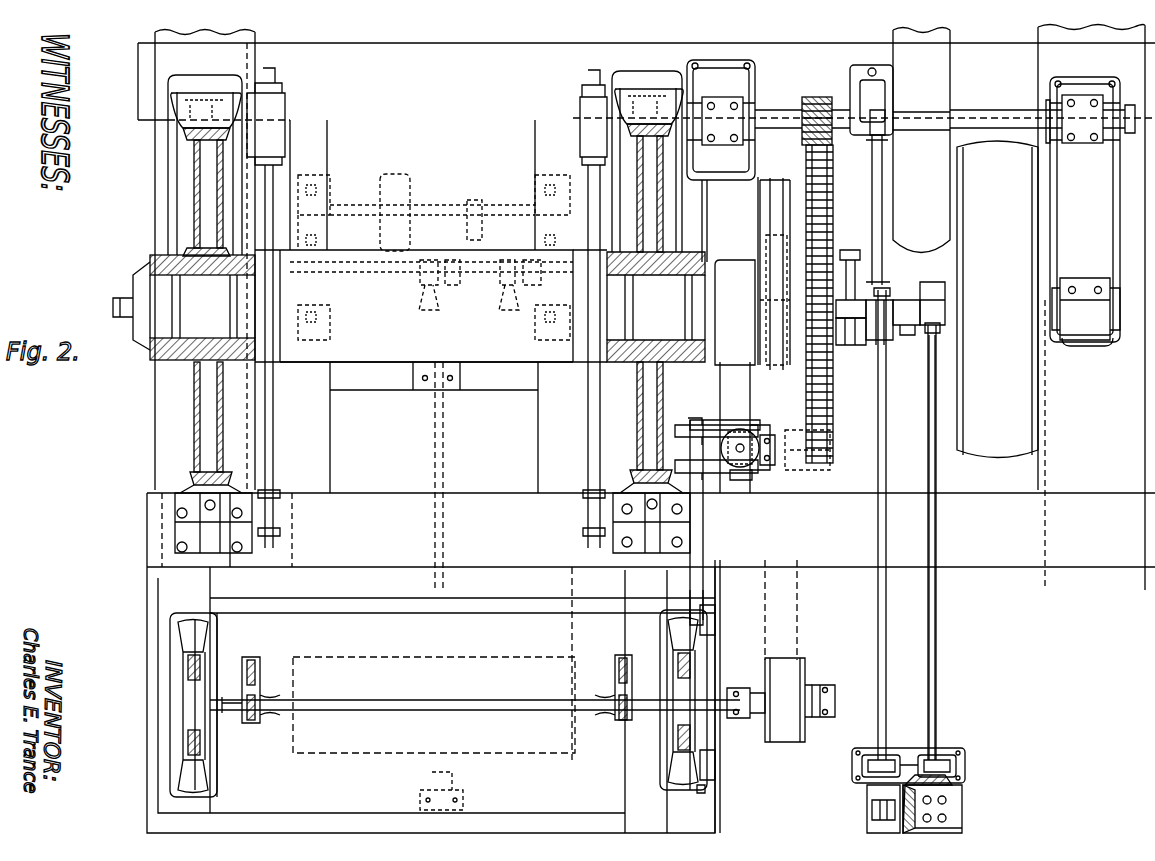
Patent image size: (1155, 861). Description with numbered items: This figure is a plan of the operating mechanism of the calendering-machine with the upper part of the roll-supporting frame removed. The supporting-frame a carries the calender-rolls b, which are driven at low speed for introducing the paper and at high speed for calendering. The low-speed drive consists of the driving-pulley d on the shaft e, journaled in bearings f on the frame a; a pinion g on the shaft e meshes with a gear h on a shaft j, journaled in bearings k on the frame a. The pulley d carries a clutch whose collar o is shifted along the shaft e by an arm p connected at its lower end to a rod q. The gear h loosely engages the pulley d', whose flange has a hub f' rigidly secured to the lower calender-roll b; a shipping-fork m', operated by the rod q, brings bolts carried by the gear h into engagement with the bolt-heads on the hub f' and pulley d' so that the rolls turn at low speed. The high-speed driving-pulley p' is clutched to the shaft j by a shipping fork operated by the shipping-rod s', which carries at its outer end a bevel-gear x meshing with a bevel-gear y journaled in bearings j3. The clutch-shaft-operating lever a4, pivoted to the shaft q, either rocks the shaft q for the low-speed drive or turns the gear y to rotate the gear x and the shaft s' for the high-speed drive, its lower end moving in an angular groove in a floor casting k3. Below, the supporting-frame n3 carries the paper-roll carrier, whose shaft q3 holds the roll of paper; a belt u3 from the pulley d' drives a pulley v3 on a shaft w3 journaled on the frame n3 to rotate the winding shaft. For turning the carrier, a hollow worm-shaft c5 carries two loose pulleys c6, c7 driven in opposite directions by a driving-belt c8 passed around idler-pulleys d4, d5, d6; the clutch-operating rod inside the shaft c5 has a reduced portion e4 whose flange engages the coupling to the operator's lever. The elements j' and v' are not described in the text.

The supporting-frame a is at (225, 394).
The calender-rolls b is at (407, 232).
The driving-pulley d is at (935, 85).
The pulley d' is at (777, 258).
The shaft e is at (973, 115).
The bearings f is at (903, 196).
The hub f' is at (735, 355).
The pinion g is at (815, 98).
The gear h is at (828, 230).
The shaft j is at (851, 349).
The bracket j' is at (851, 271).
The collar o is at (870, 130).
The arm p is at (869, 197).
The driving-pulley p' is at (1032, 299).
The bearings k is at (1077, 278).
The collar v' is at (923, 331).
The shipping-fork m' is at (873, 349).
The rod q is at (886, 395).
The shipping-rod s' is at (961, 547).
The casting k3 is at (852, 770).
The clutch-shaft-operating lever a4 is at (872, 804).
The bevel-gear x is at (962, 773).
The bearings j3 is at (960, 795).
The bevel-gear y is at (962, 822).
The driving-belt c8 is at (727, 415).
The pulley c6 is at (715, 430).
The pulley c7 is at (715, 473).
The worm-shaft c5 is at (702, 582).
The idler-pulley d6 is at (744, 428).
The idler-pulley d5 is at (747, 472).
The idler-pulley d4 is at (760, 462).
The belt u3 is at (793, 598).
The pulley v3 is at (783, 670).
The shaft w3 is at (757, 712).
The supporting-frame n3 is at (206, 643).
The shaft q3 is at (328, 745).
The reduced portion e4 is at (700, 787).